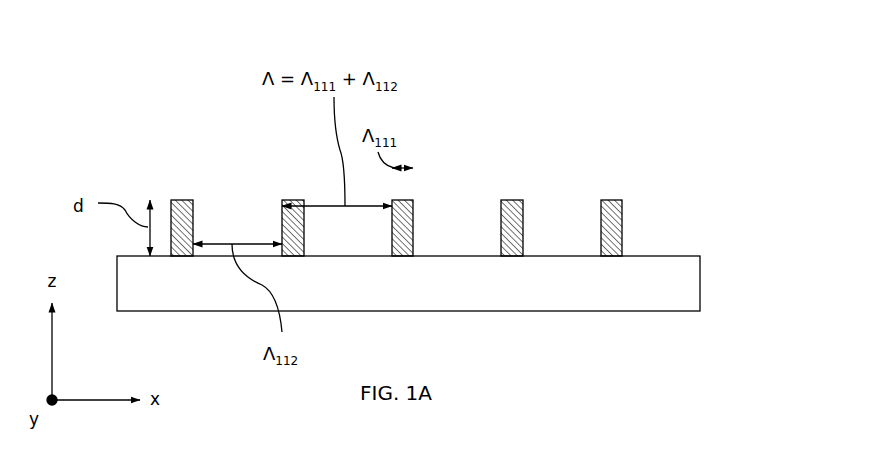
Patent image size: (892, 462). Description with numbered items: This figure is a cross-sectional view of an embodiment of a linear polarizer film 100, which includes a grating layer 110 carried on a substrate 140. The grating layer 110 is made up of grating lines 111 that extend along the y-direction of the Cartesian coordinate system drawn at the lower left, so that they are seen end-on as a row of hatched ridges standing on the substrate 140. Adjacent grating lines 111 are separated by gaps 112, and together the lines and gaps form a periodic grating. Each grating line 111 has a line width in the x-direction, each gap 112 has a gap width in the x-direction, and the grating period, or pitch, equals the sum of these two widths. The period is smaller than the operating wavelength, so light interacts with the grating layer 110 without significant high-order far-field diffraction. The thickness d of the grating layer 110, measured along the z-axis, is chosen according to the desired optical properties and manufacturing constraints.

The linear polarizer film 100 is at (105, 120).
The grating layer 110 is at (692, 222).
The grating lines 111 is at (293, 200).
The gaps 112 is at (219, 237).
The substrate 140 is at (427, 296).